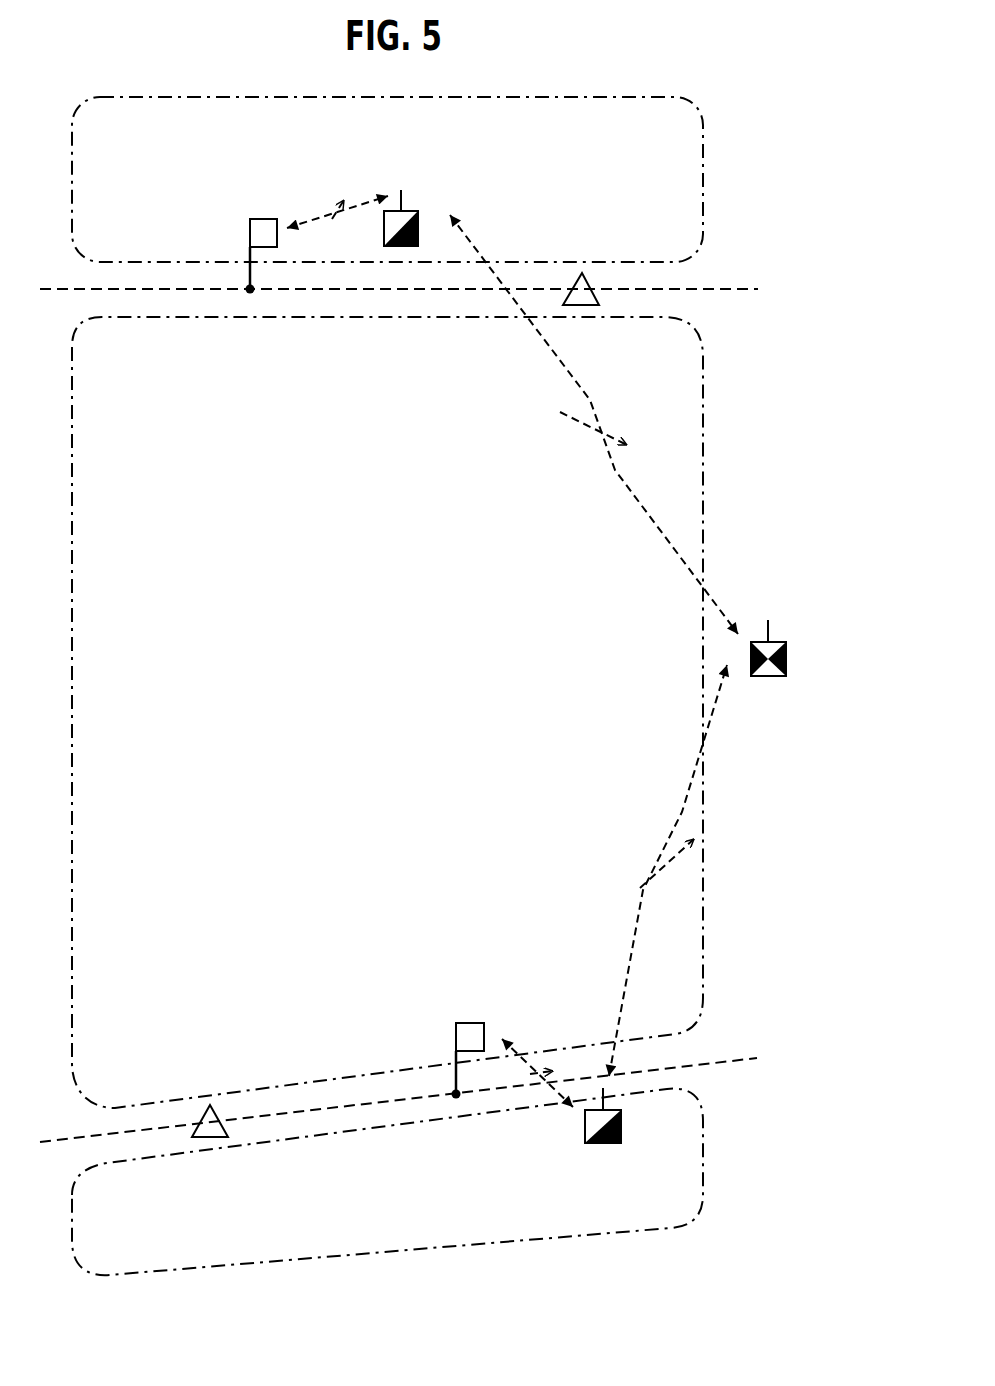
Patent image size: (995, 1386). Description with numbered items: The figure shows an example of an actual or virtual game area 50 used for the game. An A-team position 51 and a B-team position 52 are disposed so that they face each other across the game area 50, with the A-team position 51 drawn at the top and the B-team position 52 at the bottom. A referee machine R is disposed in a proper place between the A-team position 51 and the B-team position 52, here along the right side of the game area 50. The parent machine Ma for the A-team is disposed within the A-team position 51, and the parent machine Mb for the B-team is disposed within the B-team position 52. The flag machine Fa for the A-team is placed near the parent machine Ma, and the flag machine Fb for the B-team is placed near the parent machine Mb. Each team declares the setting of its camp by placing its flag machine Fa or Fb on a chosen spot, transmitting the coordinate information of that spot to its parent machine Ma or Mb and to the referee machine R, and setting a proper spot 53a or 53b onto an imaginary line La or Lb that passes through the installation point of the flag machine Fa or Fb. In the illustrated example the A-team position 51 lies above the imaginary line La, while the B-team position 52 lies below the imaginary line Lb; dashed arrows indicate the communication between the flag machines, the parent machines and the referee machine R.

The game area 50 is at (387, 712).
The A-team position 51 is at (387, 179).
The B-team position 52 is at (387, 1182).
The proper spot 53a is at (585, 282).
The proper spot 53b is at (222, 1120).
The flag machine Fa is at (250, 229).
The flag machine Fb is at (456, 1030).
The parent machine Ma is at (420, 222).
The parent machine Mb is at (603, 1143).
The imaginary line La is at (745, 292).
The imaginary line Lb is at (737, 1046).
The referee machine R is at (782, 642).